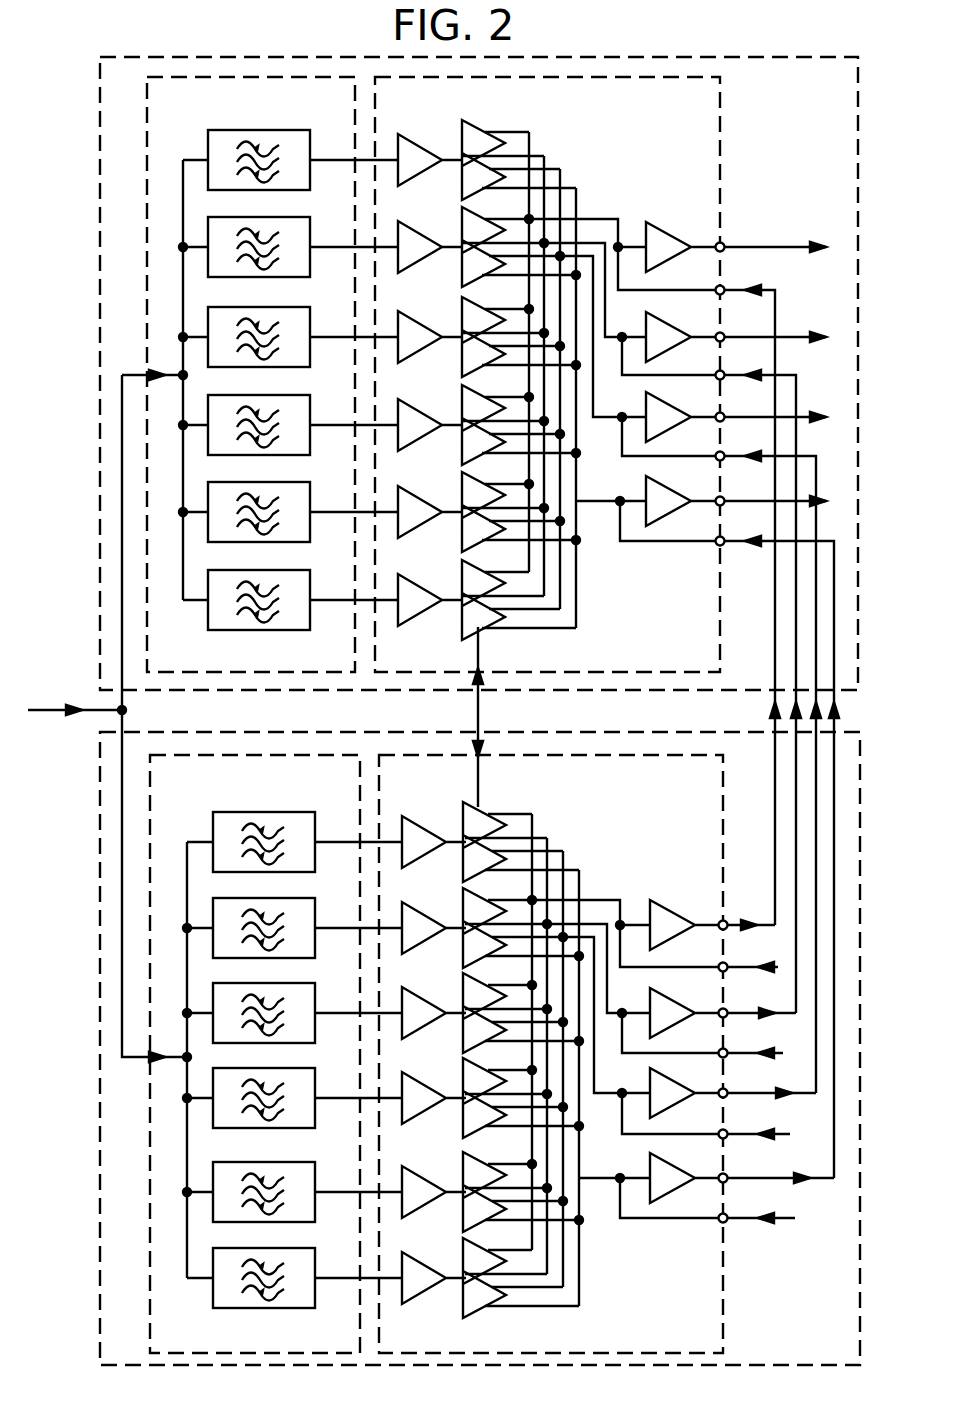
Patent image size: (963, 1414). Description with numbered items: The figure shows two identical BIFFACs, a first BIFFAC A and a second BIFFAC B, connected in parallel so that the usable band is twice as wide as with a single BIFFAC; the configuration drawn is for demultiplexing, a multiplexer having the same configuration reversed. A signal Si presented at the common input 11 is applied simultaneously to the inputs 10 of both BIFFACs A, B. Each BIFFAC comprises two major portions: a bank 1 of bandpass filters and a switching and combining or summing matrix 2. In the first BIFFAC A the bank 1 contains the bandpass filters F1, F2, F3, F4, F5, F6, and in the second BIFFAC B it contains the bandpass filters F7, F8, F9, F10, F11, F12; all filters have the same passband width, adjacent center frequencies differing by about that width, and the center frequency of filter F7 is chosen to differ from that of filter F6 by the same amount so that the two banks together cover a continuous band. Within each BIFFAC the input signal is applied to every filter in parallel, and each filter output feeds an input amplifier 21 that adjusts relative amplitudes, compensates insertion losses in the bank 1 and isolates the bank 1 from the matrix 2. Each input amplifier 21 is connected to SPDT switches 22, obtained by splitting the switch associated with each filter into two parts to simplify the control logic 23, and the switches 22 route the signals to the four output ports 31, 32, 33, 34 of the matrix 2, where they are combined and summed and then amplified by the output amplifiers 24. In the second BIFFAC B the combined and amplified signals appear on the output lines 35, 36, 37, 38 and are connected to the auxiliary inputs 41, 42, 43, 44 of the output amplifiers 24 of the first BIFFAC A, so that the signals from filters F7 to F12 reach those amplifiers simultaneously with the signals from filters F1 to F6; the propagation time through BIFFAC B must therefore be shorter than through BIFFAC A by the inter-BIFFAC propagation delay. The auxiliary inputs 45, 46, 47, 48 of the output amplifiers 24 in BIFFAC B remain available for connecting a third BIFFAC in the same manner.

The bank of bandpass filters 1 is at (167, 102).
The switching and combining matrix 2 is at (700, 103).
The input 10 is at (132, 348).
The input 11 is at (87, 708).
The input amplifier 21 is at (404, 143).
The SPDT switch 22 is at (464, 131).
The control logic 23 is at (480, 700).
The output amplifier 24 is at (664, 224).
The output port 31 is at (724, 244).
The output port 32 is at (724, 334).
The output port 33 is at (724, 414).
The output port 34 is at (724, 498).
The output line 35 is at (727, 922).
The output line 36 is at (727, 1010).
The output line 37 is at (727, 1090).
The output line 38 is at (727, 1175).
The auxiliary input 41 is at (724, 287).
The auxiliary input 42 is at (724, 372).
The auxiliary input 43 is at (724, 453).
The auxiliary input 44 is at (724, 538).
The auxiliary input 45 is at (727, 964).
The auxiliary input 46 is at (727, 1050).
The auxiliary input 47 is at (727, 1131).
The auxiliary input 48 is at (727, 1215).
The bandpass filter F1 is at (302, 136).
The bandpass filter F2 is at (302, 223).
The bandpass filter F3 is at (302, 313).
The bandpass filter F4 is at (302, 401).
The bandpass filter F5 is at (302, 488).
The bandpass filter F6 is at (302, 576).
The bandpass filter F7 is at (305, 818).
The bandpass filter F8 is at (305, 904).
The bandpass filter F9 is at (305, 989).
The bandpass filter F10 is at (305, 1074).
The bandpass filter F11 is at (305, 1168).
The bandpass filter F12 is at (305, 1254).
The first BIFFAC A is at (846, 106).
The second BIFFAC B is at (849, 1353).